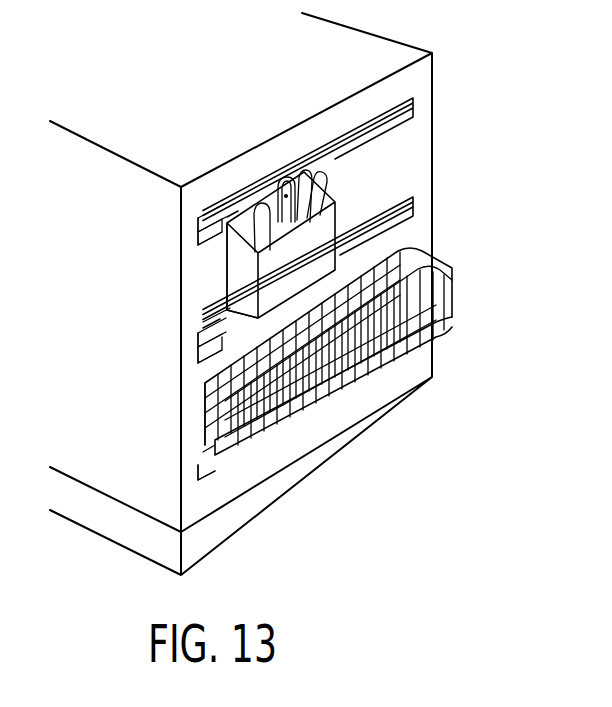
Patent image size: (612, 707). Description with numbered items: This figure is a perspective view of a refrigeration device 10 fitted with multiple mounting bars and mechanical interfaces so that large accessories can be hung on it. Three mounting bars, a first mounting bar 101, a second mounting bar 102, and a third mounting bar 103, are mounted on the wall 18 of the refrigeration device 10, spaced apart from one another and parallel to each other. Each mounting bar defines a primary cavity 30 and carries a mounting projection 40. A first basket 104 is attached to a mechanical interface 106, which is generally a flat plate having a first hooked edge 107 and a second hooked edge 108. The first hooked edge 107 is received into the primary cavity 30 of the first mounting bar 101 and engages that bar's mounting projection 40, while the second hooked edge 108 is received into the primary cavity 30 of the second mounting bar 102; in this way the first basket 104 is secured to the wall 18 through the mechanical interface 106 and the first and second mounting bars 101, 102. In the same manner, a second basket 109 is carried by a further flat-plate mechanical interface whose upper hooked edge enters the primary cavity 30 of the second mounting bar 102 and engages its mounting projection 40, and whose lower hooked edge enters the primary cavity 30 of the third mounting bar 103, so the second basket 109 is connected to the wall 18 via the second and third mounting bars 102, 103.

The refrigeration device 10 is at (335, 50).
The wall 18 is at (428, 143).
The primary cavity 30 is at (233, 204).
The mounting projection 40 is at (197, 233).
The first mounting bar 101 is at (406, 111).
The second mounting bar 102 is at (408, 210).
The third mounting bar 103 is at (200, 474).
The first basket 104 is at (328, 238).
The mechanical interface 106 is at (150, 270).
The first hooked edge 107 is at (173, 247).
The second hooked edge 108 is at (171, 305).
The second basket 109 is at (448, 275).